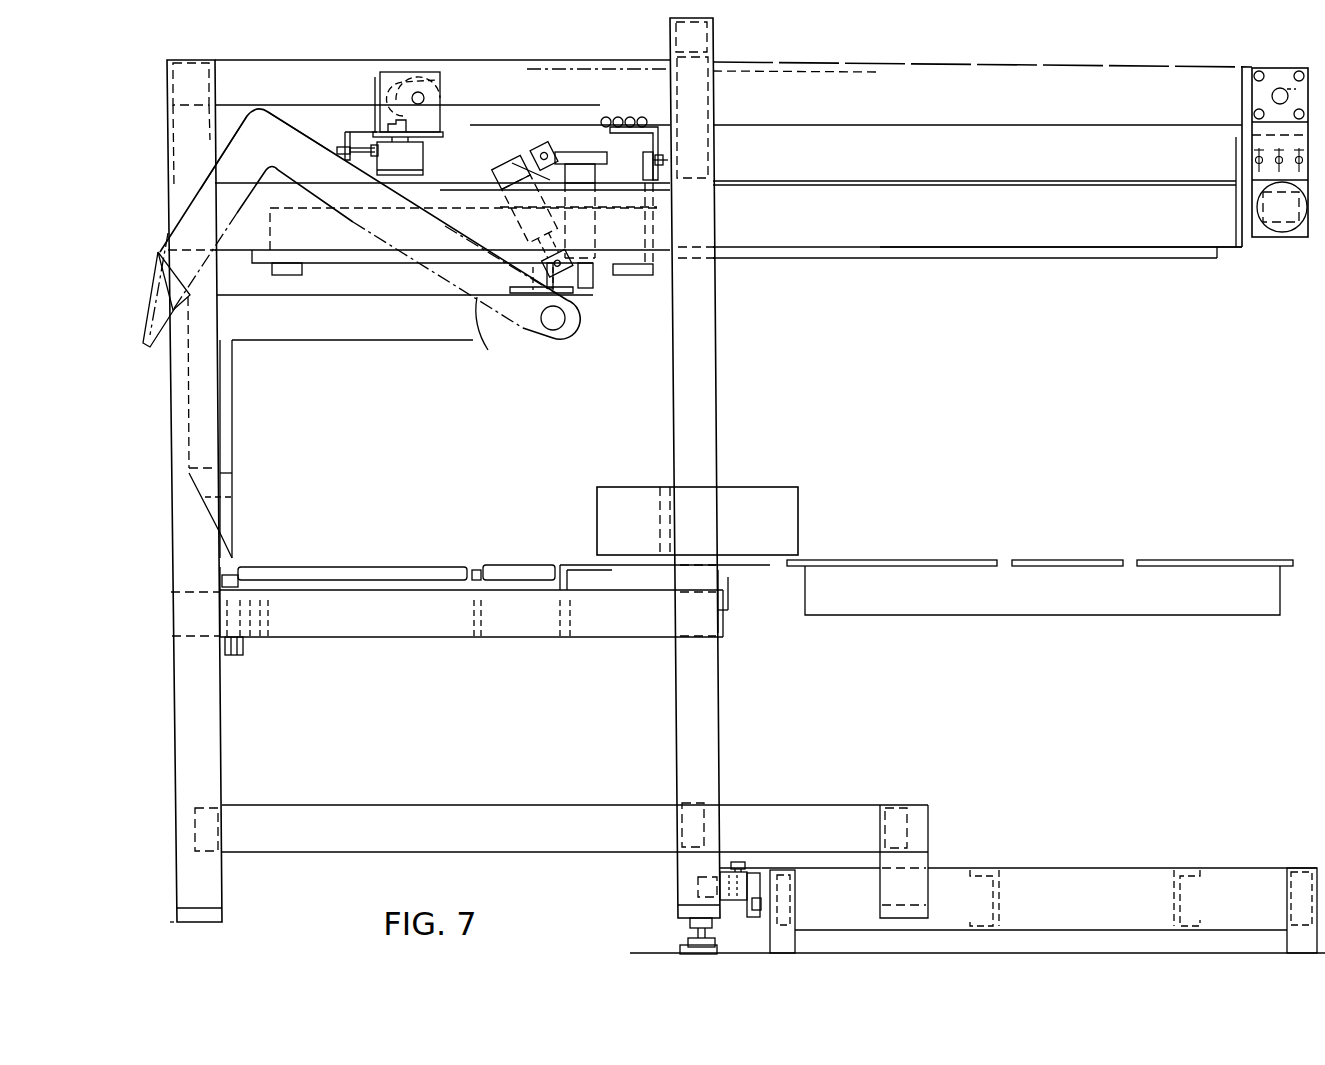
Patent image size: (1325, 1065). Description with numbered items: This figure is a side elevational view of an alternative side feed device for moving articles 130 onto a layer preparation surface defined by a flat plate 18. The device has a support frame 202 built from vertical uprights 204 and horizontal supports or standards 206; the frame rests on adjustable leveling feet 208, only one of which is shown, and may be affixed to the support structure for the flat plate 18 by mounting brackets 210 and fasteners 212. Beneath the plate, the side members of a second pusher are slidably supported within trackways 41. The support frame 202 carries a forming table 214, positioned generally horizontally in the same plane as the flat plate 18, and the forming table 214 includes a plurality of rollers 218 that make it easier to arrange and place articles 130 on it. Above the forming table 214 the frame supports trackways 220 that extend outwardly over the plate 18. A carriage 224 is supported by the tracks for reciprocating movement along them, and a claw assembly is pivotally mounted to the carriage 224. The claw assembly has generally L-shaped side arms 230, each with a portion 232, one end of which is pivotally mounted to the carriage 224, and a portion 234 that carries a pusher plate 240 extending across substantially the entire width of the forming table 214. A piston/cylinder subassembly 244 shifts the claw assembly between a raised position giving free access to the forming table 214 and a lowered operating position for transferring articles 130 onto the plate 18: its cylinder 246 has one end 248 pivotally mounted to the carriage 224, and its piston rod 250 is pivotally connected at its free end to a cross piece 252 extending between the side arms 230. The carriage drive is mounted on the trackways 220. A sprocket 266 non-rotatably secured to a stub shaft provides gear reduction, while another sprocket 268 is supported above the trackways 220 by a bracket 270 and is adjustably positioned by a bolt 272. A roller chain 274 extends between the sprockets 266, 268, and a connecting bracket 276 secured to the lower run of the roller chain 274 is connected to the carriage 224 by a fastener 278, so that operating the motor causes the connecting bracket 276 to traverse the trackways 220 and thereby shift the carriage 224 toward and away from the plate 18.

The flat plate 18 is at (1210, 565).
The trackways 41 is at (990, 870).
The articles 130 is at (765, 495).
The support frame 202 is at (152, 452).
The vertical uprights 204 is at (713, 357).
The horizontal supports 206 is at (248, 62).
The leveling feet 208 is at (680, 921).
The mounting brackets 210 is at (757, 895).
The fasteners 212 is at (738, 862).
The forming table 214 is at (390, 562).
The rollers 218 is at (305, 570).
The trackways 220 is at (853, 216).
The carriage 224 is at (590, 292).
The side arms 230 is at (302, 118).
The arm portion 232 is at (318, 146).
The arm portion 234 is at (245, 149).
The pusher plate 240 is at (182, 296).
The piston/cylinder subassembly 244 is at (498, 177).
The cylinder 246 is at (515, 167).
The cylinder end 248 is at (553, 152).
The piston rod 250 is at (500, 257).
The cross piece 252 is at (492, 352).
The sprocket 266 is at (360, 805).
The sprocket 268 is at (422, 97).
The bracket 270 is at (415, 151).
The bolt 272 is at (454, 241).
The roller chain 274 is at (650, 120).
The connecting bracket 276 is at (655, 141).
The fastener 278 is at (662, 160).